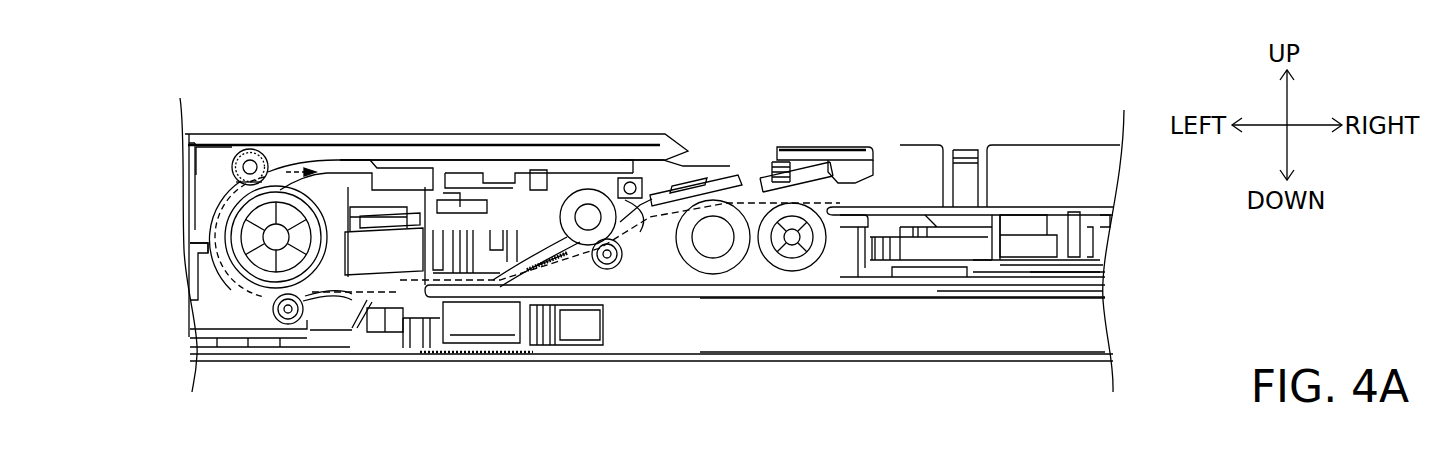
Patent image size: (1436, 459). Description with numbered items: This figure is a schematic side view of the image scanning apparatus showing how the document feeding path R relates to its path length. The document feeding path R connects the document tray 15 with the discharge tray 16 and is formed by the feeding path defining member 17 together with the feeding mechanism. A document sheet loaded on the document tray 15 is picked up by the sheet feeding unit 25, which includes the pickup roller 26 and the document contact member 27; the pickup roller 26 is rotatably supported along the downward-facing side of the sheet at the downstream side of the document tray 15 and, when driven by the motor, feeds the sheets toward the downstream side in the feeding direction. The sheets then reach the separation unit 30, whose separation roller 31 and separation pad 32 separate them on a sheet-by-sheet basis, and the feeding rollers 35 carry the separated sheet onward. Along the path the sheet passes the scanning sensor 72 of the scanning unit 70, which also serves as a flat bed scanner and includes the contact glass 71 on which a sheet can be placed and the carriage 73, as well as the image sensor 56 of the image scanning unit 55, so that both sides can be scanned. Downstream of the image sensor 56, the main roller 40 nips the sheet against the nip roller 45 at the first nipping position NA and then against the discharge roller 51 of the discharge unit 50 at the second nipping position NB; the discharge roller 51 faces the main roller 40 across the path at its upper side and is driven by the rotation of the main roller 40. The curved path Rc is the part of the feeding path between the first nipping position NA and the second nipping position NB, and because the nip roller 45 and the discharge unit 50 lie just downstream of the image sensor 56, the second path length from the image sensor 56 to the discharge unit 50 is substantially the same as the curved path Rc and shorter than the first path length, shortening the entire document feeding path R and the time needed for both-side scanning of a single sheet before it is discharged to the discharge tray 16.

The document tray 15 is at (937, 208).
The discharge tray 16 is at (458, 175).
The feeding path defining member 17 is at (530, 258).
The sheet feeding unit 25 is at (803, 168).
The pickup roller 26 is at (792, 267).
The document contact member 27 is at (778, 162).
The separation unit 30 is at (713, 178).
The separation roller 31 is at (715, 265).
The separation pad 32 is at (703, 198).
The feeding rollers 35 is at (577, 196).
The main roller 40 is at (237, 272).
The nip roller 45 is at (302, 319).
The discharge unit 50 is at (228, 150).
The discharge roller 51 is at (248, 149).
The image scanning unit 55 is at (397, 212).
The image sensor 56 is at (371, 257).
The scanning unit 70 is at (945, 325).
The contact glass 71 is at (1027, 292).
The scanning sensor 72 is at (470, 329).
The carriage 73 is at (557, 336).
The document feeding path R is at (294, 168).
The curved path Rc is at (200, 253).
The first nipping position NA is at (280, 306).
The second nipping position NB is at (232, 180).